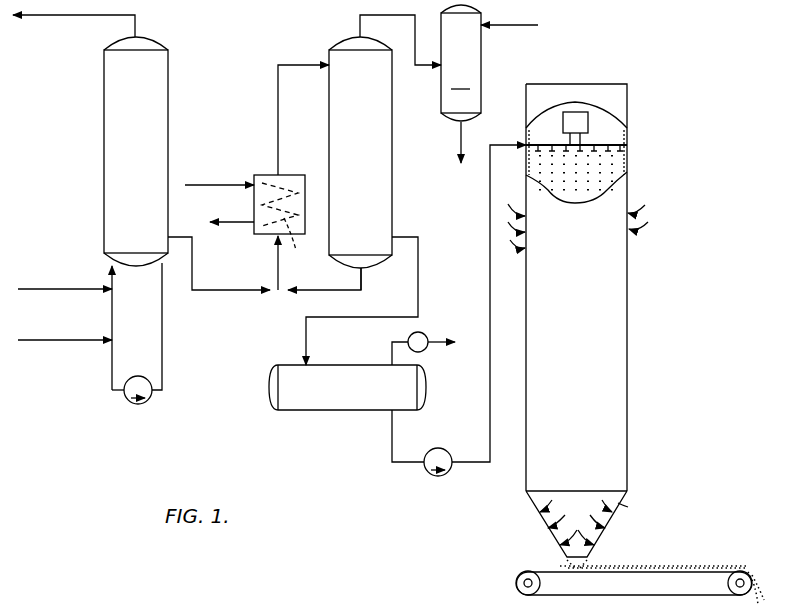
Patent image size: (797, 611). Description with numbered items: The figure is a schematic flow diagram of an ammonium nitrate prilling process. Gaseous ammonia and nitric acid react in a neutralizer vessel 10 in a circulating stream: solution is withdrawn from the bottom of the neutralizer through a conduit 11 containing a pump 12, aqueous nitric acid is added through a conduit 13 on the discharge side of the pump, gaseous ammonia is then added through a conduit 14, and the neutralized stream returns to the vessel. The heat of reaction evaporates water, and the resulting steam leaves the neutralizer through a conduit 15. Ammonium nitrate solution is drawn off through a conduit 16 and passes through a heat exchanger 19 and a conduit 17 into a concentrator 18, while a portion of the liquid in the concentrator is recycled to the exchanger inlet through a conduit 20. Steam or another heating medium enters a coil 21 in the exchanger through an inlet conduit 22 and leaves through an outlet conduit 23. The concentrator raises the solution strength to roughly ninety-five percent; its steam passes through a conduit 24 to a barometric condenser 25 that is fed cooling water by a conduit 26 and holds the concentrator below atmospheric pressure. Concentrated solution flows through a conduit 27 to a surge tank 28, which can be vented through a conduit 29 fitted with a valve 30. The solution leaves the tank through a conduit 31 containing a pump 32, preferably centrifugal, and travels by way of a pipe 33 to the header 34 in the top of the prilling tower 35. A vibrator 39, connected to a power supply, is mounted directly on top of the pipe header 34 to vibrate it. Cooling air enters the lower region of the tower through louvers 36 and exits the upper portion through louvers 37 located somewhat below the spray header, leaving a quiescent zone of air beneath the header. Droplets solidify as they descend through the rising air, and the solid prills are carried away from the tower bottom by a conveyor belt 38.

The neutralizer vessel 10 is at (104, 132).
The conduit 11 is at (166, 340).
The pump 12 is at (146, 401).
The conduit 13 is at (84, 341).
The conduit 14 is at (84, 290).
The conduit 15 is at (64, 16).
The conduit 16 is at (237, 291).
The conduit 17 is at (278, 108).
The concentrator 18 is at (392, 187).
The heat exchanger 19 is at (295, 179).
The conduit 20 is at (362, 288).
The coil 21 is at (301, 238).
The inlet conduit 22 is at (214, 186).
The outlet conduit 23 is at (246, 224).
The conduit 24 is at (359, 18).
The barometric condenser 25 is at (491, 68).
The conduit 26 is at (511, 28).
The conduit 27 is at (418, 273).
The surge tank 28 is at (312, 412).
The conduit 29 is at (389, 344).
The valve 30 is at (426, 339).
The conduit 31 is at (390, 438).
The pump 32 is at (445, 450).
The pipe 33 is at (487, 308).
The header 34 is at (616, 143).
The prilling tower 35 is at (631, 304).
The louvers 36 is at (548, 528).
The louvers 37 is at (523, 240).
The conveyor belt 38 is at (668, 566).
The vibrator 39 is at (580, 122).